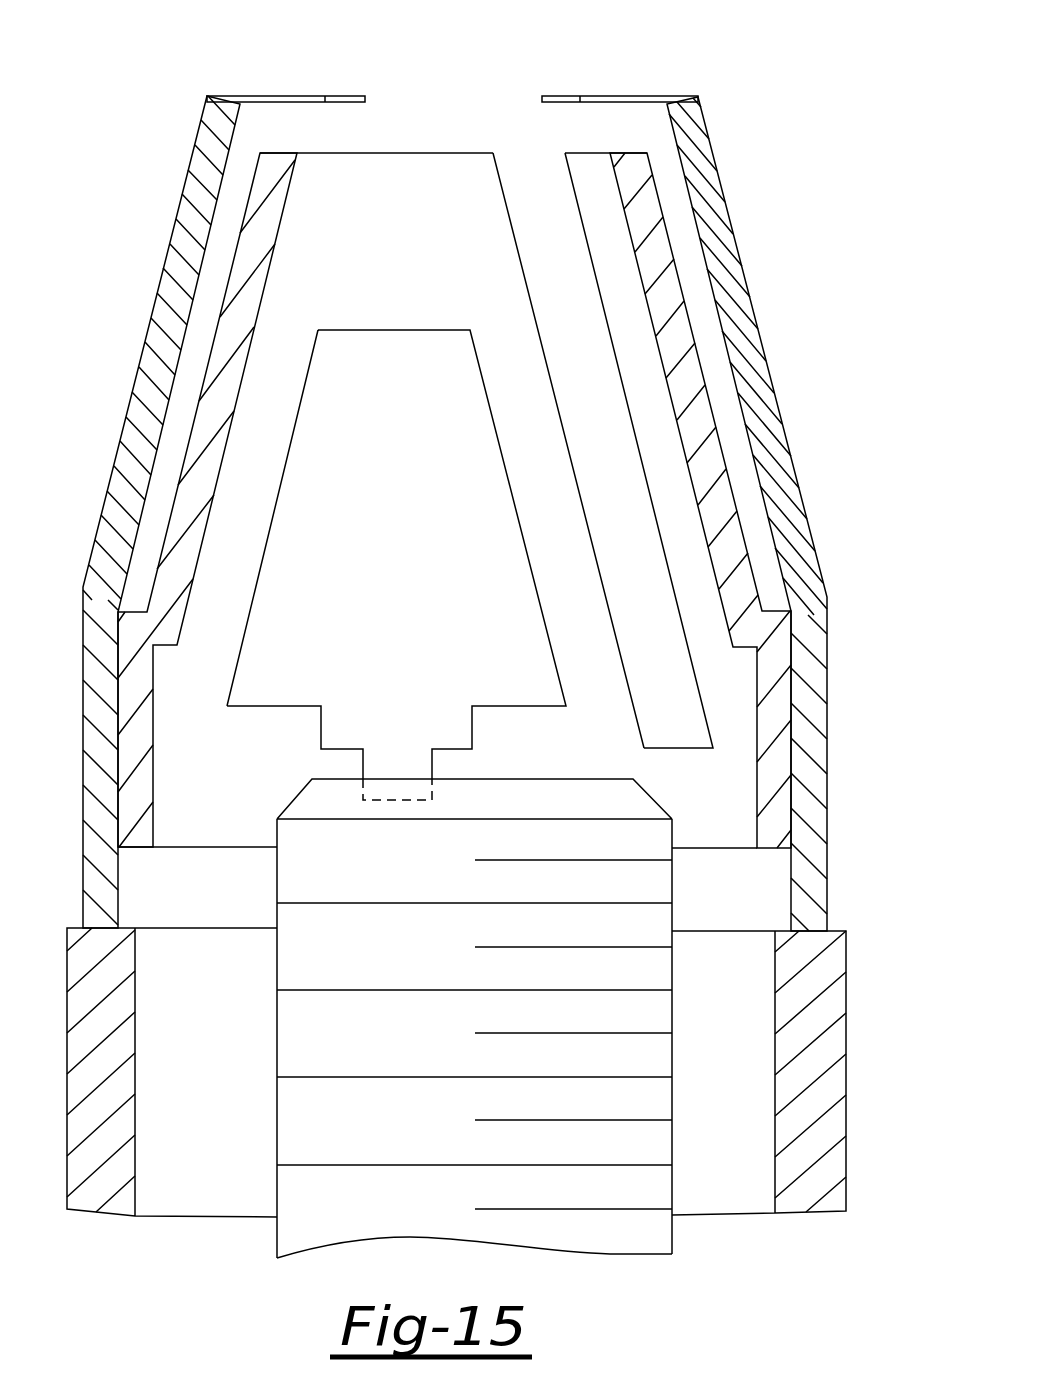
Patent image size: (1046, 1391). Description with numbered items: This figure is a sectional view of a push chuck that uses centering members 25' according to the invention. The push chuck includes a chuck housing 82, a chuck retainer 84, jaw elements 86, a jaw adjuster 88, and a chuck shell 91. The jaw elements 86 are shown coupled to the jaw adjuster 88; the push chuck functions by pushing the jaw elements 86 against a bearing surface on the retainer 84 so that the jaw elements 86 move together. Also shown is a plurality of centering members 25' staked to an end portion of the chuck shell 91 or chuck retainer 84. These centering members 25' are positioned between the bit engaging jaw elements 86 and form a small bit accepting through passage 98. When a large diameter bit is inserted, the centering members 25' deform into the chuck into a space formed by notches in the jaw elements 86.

The bit accepting through passage 98 is at (440, 107).
The centering members 25' is at (620, 62).
The jaw elements 86 is at (373, 352).
The chuck retainer 84 is at (725, 687).
The chuck shell 91 is at (828, 833).
The jaw adjuster 88 is at (673, 1017).
The chuck housing 82 is at (833, 1050).